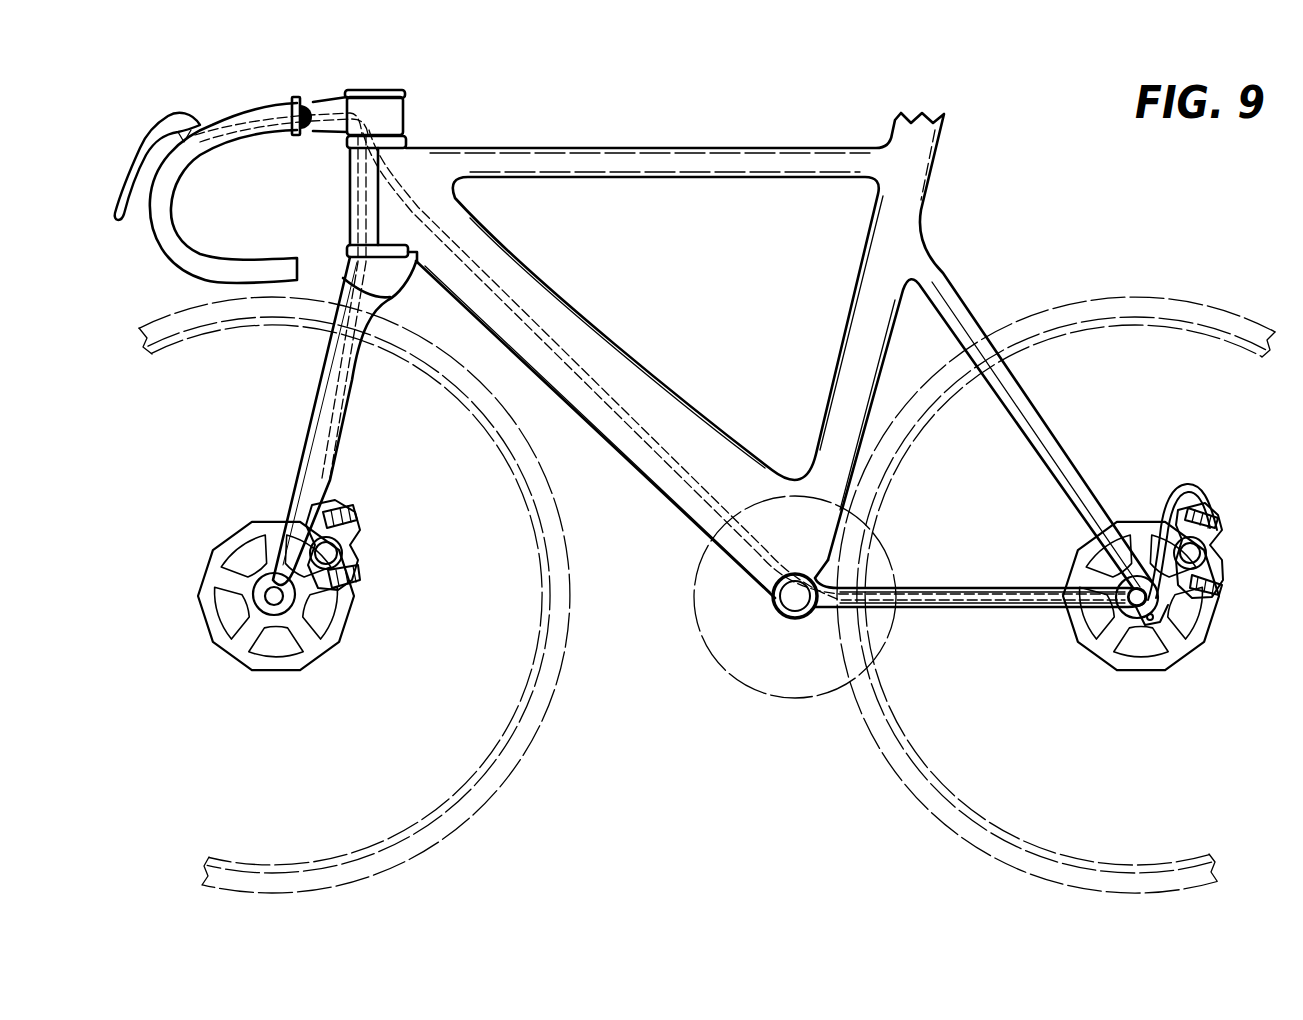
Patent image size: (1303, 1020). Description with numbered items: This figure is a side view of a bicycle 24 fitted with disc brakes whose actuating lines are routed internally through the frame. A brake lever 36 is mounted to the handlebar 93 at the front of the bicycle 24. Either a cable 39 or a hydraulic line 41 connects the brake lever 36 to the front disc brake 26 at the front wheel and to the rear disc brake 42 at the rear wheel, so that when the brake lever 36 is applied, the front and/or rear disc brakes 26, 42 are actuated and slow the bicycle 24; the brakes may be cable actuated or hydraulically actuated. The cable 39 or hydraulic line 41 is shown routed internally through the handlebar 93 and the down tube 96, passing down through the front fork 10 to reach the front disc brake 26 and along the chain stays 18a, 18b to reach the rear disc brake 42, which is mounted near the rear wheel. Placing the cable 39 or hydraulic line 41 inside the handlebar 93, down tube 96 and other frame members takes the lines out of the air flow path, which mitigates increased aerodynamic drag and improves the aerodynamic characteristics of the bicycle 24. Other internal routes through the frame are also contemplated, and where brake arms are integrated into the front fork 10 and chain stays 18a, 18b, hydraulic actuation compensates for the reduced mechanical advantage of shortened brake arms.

The front fork 10 is at (284, 425).
The bicycle 24 is at (632, 318).
The handlebar 93 is at (255, 107).
The brake lever 36 is at (138, 146).
The cable 39 is at (660, 343).
The hydraulic line 41 is at (412, 212).
The down tube 96 is at (632, 355).
The chain stay 18a is at (980, 534).
The chain stay 18b is at (952, 578).
The front disc brake 26 is at (193, 517).
The rear disc brake 42 is at (1232, 470).